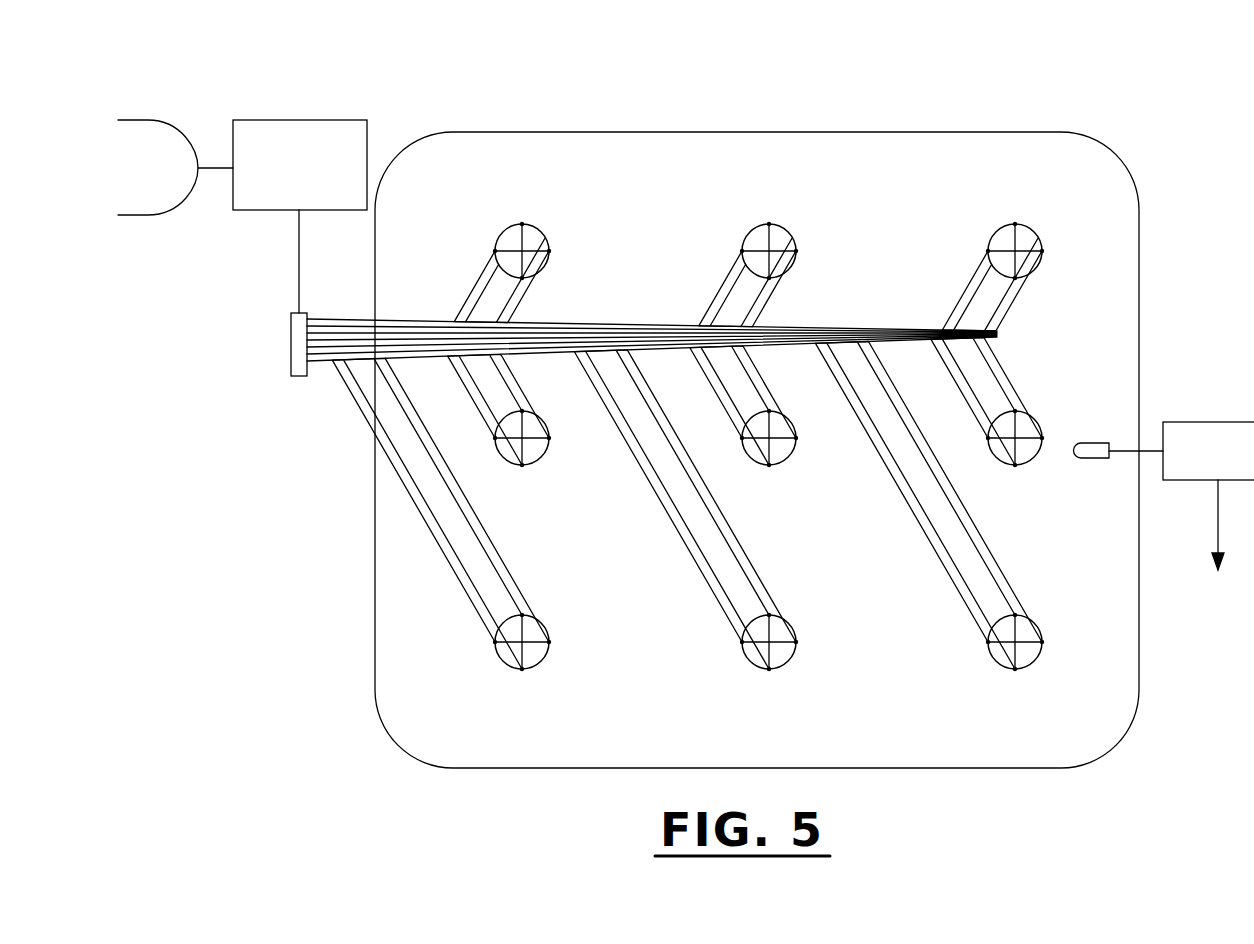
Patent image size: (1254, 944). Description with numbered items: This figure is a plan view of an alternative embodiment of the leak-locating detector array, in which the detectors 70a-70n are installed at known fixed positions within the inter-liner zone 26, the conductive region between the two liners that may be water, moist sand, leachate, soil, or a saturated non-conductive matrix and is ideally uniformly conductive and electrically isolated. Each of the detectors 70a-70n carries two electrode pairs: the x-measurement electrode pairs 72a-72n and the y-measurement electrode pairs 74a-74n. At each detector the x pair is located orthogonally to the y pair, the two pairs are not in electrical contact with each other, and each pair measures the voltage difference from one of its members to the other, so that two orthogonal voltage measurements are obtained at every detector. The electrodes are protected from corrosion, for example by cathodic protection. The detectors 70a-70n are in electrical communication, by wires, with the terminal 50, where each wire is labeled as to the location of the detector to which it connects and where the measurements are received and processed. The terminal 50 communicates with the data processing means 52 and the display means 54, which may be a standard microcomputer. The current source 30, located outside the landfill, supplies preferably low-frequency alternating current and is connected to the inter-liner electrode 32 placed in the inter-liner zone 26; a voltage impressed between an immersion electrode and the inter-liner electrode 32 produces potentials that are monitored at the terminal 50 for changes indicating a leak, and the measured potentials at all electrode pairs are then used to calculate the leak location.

The display means 54 is at (153, 120).
The data processing means 52 is at (313, 181).
The terminal 50 is at (291, 343).
The inter-liner zone 26 is at (461, 189).
The x-measurement electrode pairs 72a-72n is at (988, 251).
The y-measurement electrode pairs 74a-74n is at (988, 438).
The detectors 70a-70n is at (997, 661).
The inter-liner electrode 32 is at (1092, 443).
The current source 30 is at (1236, 468).